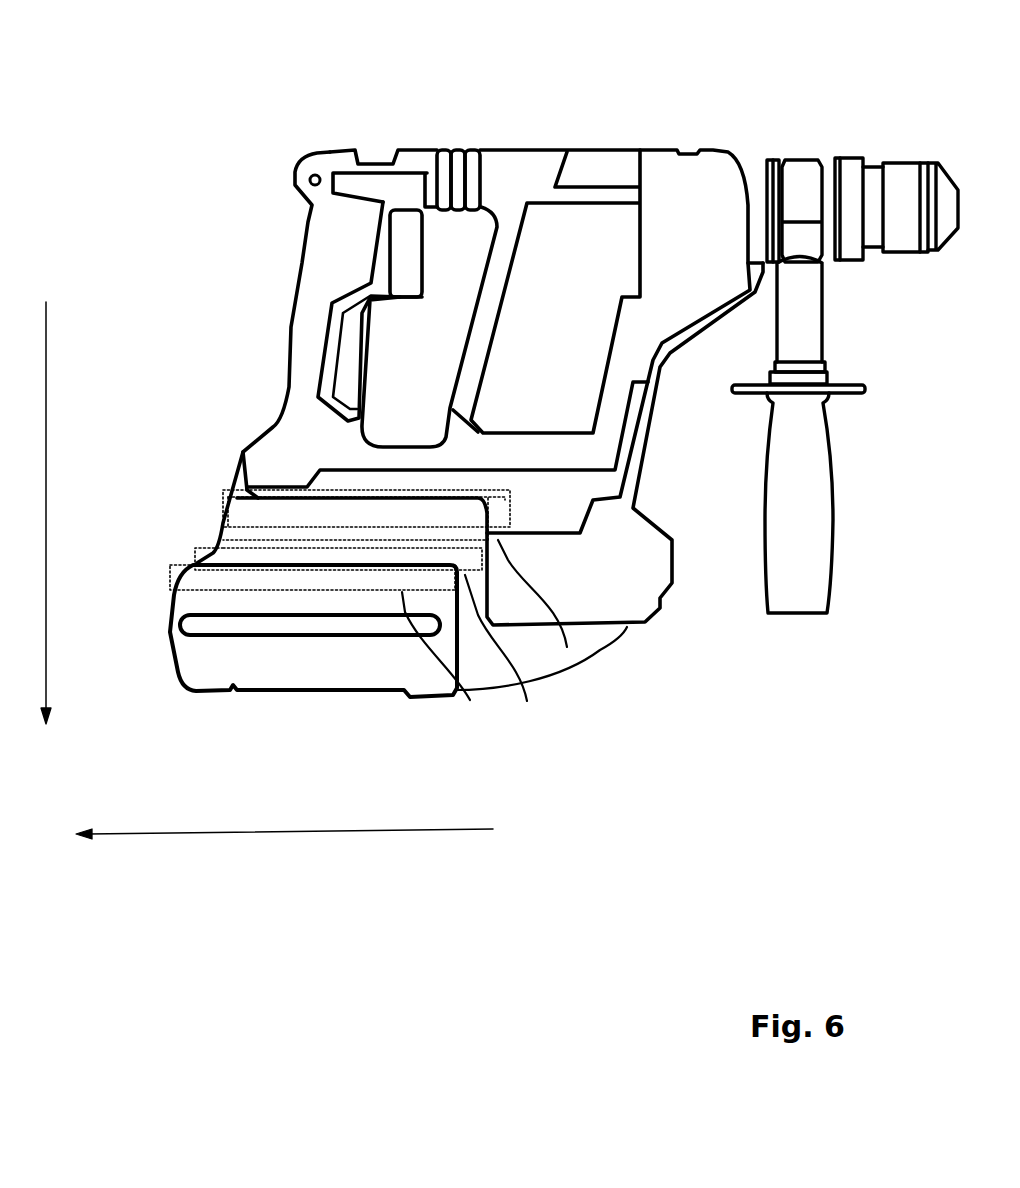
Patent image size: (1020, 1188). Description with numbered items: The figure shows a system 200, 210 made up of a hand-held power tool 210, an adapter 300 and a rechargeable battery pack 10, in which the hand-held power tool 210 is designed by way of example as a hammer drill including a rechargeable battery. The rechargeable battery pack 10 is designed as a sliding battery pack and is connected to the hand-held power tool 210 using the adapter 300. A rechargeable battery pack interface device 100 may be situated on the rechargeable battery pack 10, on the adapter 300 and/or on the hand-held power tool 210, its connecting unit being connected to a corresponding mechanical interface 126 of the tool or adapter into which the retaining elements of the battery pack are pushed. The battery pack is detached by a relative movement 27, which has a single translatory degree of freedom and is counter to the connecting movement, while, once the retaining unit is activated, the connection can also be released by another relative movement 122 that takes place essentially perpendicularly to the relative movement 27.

The hand-held power tool 200 is at (666, 104).
The hand-held power tool 210 is at (845, 385).
The other relative movement 122 is at (47, 385).
The adapter 300 is at (208, 508).
The rechargeable battery pack 10 is at (156, 598).
The relative movement 27 is at (265, 828).
The rechargeable battery pack interface device 100 is at (622, 645).
The mechanical interface 126 is at (513, 652).